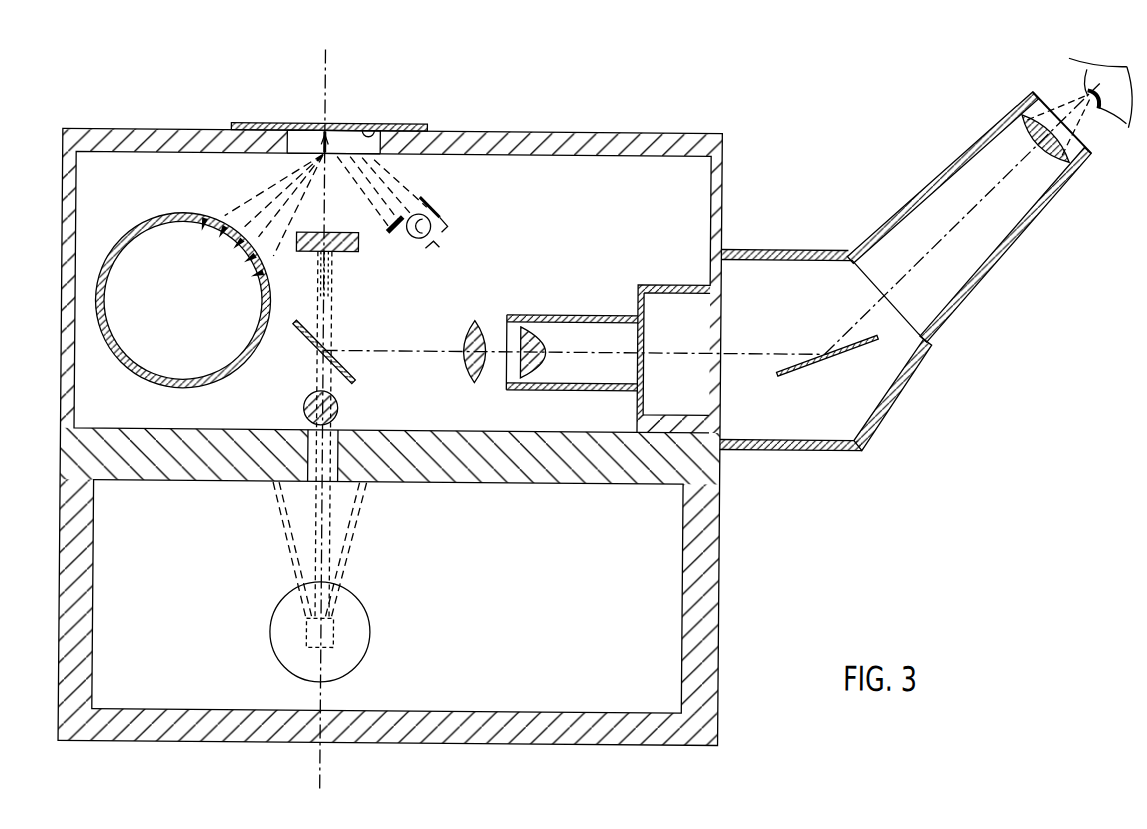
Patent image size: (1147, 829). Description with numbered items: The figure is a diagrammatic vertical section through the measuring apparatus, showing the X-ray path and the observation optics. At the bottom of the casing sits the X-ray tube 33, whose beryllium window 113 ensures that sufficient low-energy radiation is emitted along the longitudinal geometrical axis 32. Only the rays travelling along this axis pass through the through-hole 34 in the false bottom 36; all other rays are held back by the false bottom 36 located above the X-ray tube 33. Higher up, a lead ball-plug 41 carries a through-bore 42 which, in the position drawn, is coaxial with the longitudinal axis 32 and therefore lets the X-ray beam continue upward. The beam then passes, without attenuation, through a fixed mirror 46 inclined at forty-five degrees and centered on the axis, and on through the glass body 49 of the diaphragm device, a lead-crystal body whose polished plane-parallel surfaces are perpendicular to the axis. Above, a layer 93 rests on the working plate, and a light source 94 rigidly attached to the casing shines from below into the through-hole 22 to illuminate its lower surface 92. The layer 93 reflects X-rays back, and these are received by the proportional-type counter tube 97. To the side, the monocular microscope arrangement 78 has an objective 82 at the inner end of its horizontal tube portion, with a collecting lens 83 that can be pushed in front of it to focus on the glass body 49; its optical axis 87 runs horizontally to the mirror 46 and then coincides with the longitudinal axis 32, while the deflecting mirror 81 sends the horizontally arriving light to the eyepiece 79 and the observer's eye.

The through-hole 22 is at (303, 137).
The longitudinal geometrical axis 32 is at (325, 765).
The X-ray tube 33 is at (360, 617).
The through-hole 34 is at (337, 485).
The false bottom 36 is at (558, 468).
The lead ball-plug 41 is at (340, 400).
The through-bore 42 is at (319, 381).
The mirror 46 is at (348, 352).
The glass body 49 is at (352, 253).
The monocular microscope arrangement 78 is at (1055, 237).
The eyepiece 79 is at (1081, 152).
The deflecting mirror 81 is at (822, 357).
The objective 82 is at (537, 370).
The collecting lens 83 is at (473, 322).
The optical axis 87 is at (763, 346).
The lower surface 92 is at (377, 128).
The layer 93 is at (328, 131).
The light source 94 is at (433, 210).
The proportional-type counter tube 97 is at (138, 233).
The beryllium window 113 is at (293, 549).